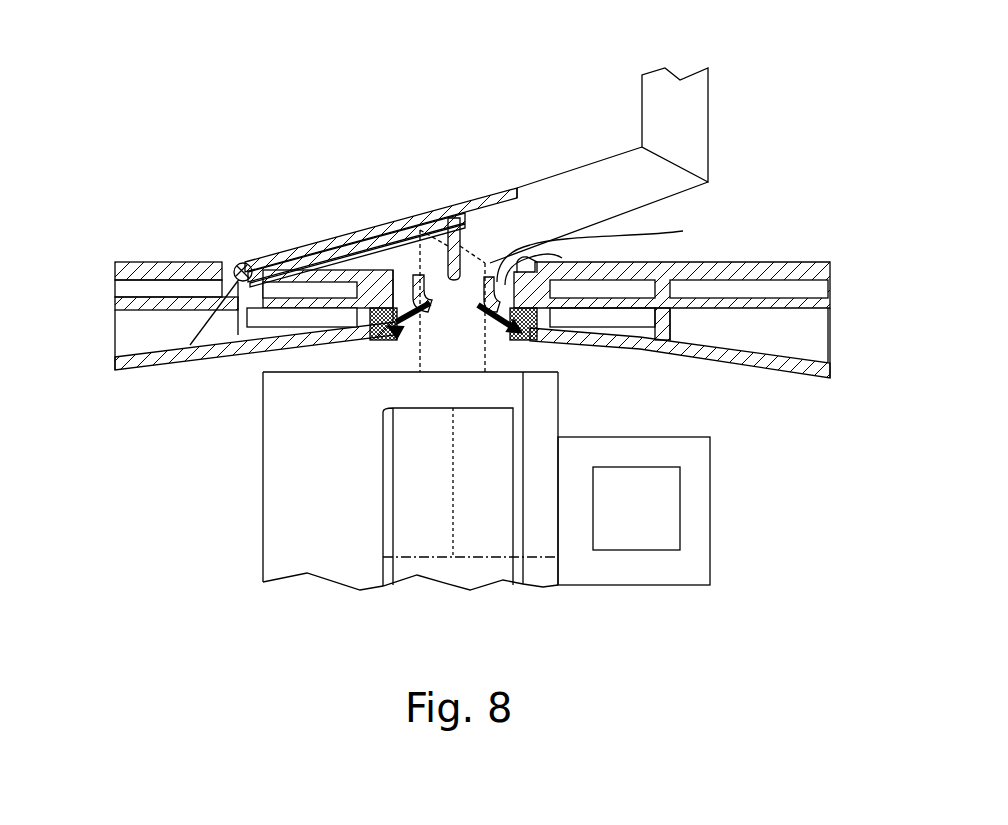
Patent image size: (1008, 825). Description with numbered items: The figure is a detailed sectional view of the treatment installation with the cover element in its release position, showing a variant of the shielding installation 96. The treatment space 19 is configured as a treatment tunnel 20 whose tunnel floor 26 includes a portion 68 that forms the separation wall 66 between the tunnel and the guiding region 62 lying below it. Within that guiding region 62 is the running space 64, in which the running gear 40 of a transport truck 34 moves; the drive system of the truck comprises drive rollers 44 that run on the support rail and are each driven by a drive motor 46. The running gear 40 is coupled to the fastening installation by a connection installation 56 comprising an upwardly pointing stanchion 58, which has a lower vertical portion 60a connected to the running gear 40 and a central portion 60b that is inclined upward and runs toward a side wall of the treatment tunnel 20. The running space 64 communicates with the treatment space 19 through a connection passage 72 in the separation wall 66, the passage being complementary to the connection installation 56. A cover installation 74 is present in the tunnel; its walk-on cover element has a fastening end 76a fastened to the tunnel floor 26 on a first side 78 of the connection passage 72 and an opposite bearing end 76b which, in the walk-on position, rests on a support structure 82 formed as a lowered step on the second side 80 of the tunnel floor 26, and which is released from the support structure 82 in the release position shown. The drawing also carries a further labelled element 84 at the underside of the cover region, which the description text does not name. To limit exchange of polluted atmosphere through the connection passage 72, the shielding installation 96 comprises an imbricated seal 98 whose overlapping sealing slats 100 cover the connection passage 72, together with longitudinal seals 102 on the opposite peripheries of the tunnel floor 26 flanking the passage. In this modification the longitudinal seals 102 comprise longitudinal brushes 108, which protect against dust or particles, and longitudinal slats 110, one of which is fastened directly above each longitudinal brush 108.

The treatment space 19 is at (795, 110).
The treatment tunnel 20 is at (782, 74).
The tunnel floor 26 is at (127, 303).
The transport truck 34 is at (247, 506).
The running gear 40 is at (247, 553).
The drive roller 44 is at (417, 563).
The drive motor 46 is at (617, 528).
The connection installation 56 is at (775, 147).
The stanchion 58 is at (690, 92).
The lower vertical portion 60a is at (503, 273).
The central portion 60b is at (583, 187).
The guiding region 62 is at (135, 447).
The running space 64 is at (775, 470).
The separation wall 66 is at (186, 250).
The portion of the tunnel floor 68 is at (142, 252).
The connection passage 72 is at (602, 250).
The cover installation 74 is at (449, 150).
The fastening end 76a is at (243, 263).
The bearing end 76b is at (510, 187).
The first side 78 is at (134, 332).
The second side 80 is at (503, 247).
The support structure 82 is at (540, 342).
The lower edge 84 is at (190, 345).
The shielding installation 96 is at (346, 240).
The imbricated seal 98 is at (309, 243).
The sealing slat 100 is at (388, 240).
The longitudinal seal 102 is at (540, 378).
The longitudinal brush 108 is at (372, 313).
The longitudinal slat 110 is at (393, 268).